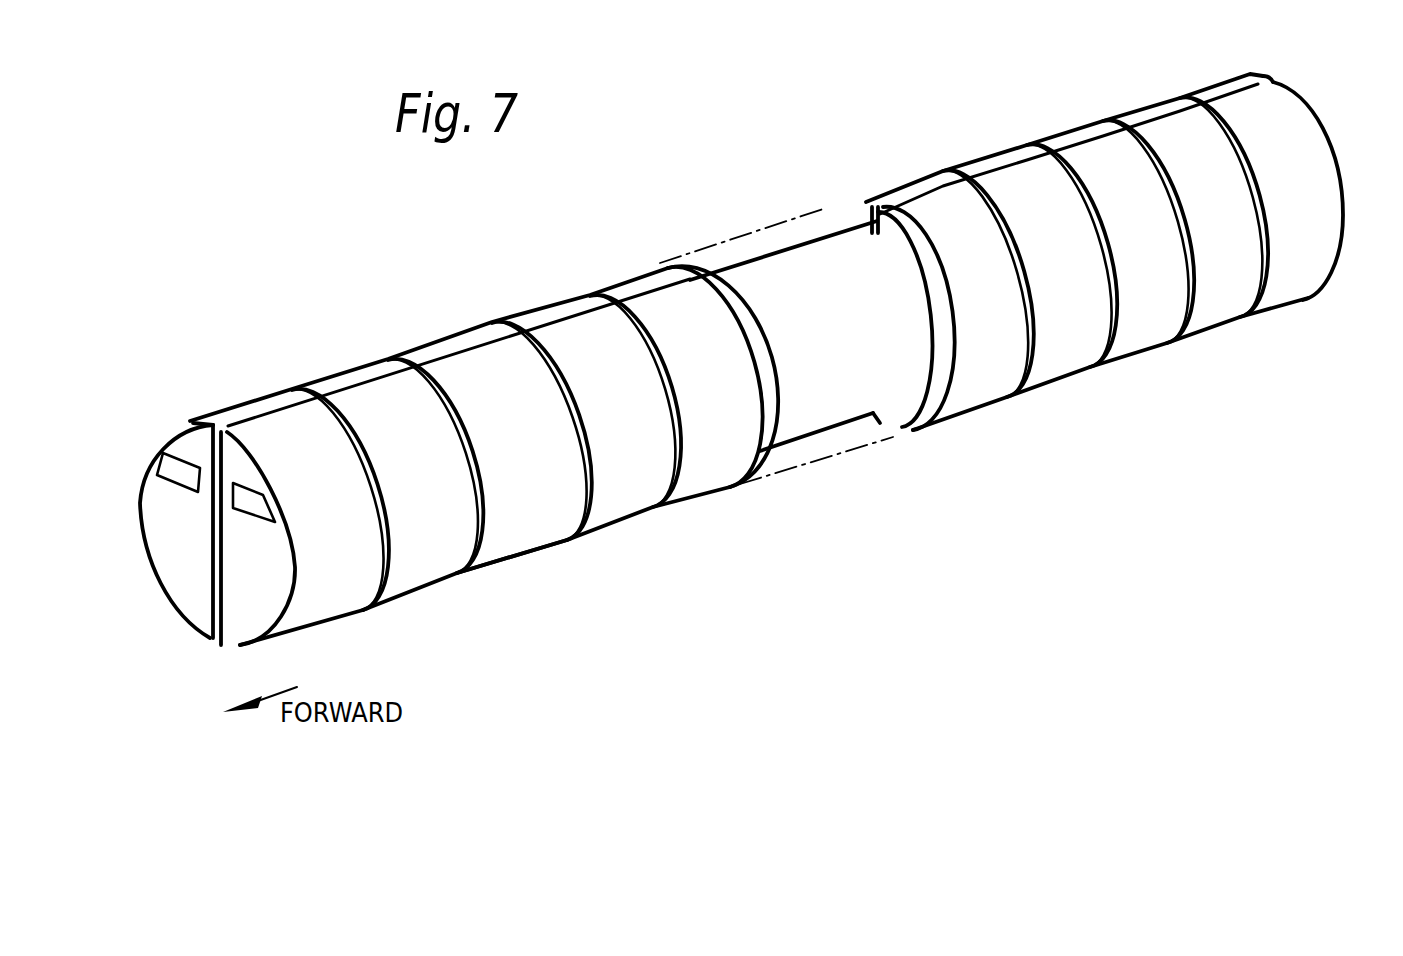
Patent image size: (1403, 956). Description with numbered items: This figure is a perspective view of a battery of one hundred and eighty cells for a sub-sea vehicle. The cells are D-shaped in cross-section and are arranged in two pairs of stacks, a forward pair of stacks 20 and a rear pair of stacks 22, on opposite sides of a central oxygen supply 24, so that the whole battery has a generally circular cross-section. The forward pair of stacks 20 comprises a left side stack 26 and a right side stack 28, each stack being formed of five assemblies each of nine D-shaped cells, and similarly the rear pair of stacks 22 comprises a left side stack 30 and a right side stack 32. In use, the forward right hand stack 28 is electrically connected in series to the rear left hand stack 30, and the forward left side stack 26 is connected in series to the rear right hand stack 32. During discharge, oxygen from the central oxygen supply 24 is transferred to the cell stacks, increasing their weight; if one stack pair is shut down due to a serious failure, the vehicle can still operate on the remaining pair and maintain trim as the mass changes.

The forward pair of stacks 20 is at (136, 550).
The rear pair of stacks 22 is at (1355, 184).
The oxygen supply 24 is at (848, 393).
The left side stack 26 is at (518, 552).
The right side stack 28 is at (346, 356).
The left side stack 30 is at (1142, 332).
The right side stack 32 is at (1055, 118).